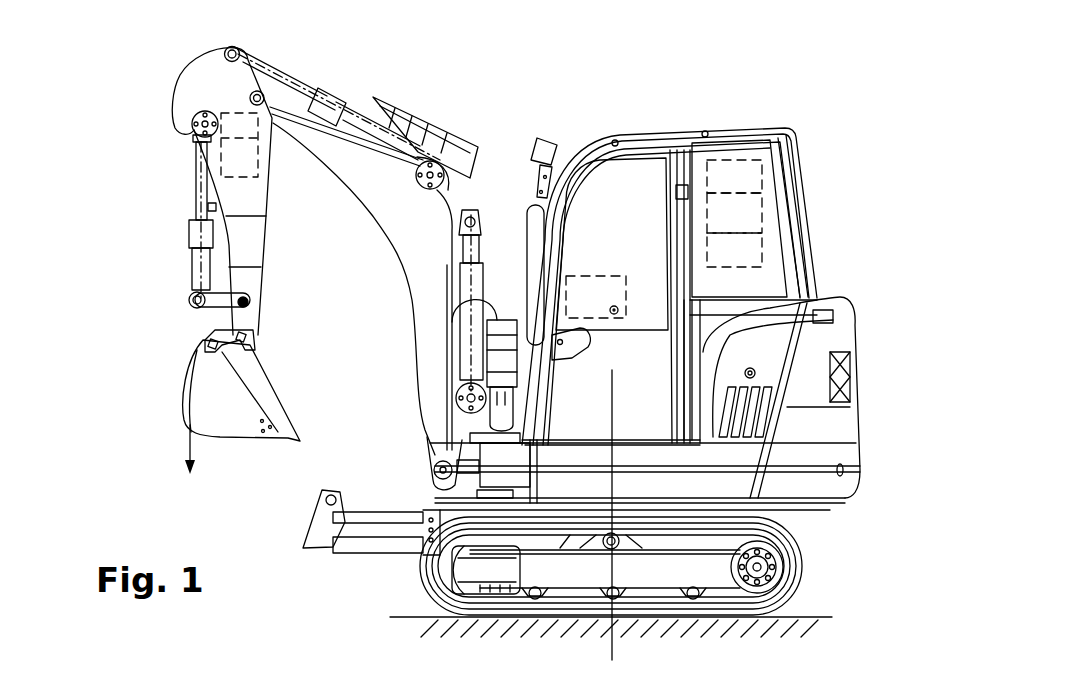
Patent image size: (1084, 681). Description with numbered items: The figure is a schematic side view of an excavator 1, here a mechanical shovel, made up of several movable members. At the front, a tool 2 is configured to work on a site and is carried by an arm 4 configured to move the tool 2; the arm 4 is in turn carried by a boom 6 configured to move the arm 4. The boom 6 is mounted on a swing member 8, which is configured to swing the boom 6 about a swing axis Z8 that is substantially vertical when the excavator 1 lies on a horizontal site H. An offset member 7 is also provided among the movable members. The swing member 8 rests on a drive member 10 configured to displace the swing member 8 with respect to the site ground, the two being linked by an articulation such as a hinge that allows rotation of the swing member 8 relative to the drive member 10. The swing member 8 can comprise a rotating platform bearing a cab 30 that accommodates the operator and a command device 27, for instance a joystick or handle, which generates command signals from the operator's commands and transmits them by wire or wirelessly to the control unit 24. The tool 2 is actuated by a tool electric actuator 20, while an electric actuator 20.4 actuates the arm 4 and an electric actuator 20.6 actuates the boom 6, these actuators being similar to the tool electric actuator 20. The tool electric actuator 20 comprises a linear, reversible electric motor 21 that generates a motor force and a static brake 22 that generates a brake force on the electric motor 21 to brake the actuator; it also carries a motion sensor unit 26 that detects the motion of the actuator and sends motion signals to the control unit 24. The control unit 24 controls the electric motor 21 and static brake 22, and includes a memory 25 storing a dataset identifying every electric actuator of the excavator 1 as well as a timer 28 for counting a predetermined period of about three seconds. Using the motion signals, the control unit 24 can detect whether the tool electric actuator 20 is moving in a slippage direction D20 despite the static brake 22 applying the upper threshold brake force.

The excavator 1 is at (212, 525).
The tool 2 is at (221, 401).
The arm 4 is at (249, 237).
The boom 6 is at (414, 250).
The offset member 7 is at (487, 470).
The swing member 8 is at (808, 470).
The drive member 10 is at (797, 560).
The tool electric actuator 20 is at (180, 185).
The electric actuator 20.4 is at (367, 88).
The electric actuator 20.6 is at (494, 262).
The electric motor 21 is at (228, 160).
The static brake 22 is at (232, 118).
The control unit 24 is at (734, 176).
The memory 25 is at (734, 213).
The motion sensor unit 26 is at (212, 208).
The command device 27 is at (596, 297).
The timer 28 is at (734, 250).
The cab 30 is at (795, 183).
The slippage direction D20 is at (188, 462).
The swing axis Z8 is at (628, 522).
The horizontal site H is at (818, 614).